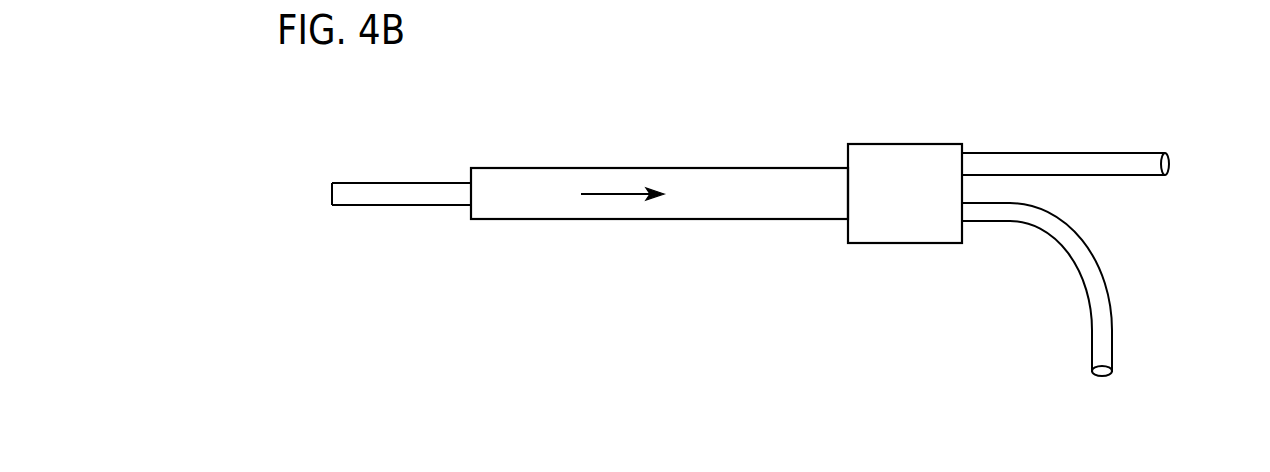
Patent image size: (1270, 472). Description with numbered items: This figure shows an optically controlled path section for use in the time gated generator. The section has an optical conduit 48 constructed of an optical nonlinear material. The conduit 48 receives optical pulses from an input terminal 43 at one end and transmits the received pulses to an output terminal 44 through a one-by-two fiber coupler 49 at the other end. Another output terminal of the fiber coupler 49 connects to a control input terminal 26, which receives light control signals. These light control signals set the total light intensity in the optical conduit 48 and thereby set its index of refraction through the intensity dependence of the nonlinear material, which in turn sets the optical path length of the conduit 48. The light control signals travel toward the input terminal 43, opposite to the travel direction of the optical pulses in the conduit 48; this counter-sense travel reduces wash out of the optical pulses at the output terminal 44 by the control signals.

The input terminal 43 is at (332, 198).
The optical conduit 48 is at (743, 176).
The 1×2 fiber coupler 49 is at (898, 143).
The output terminal 44 is at (1171, 163).
The control input terminal 26 is at (1088, 322).